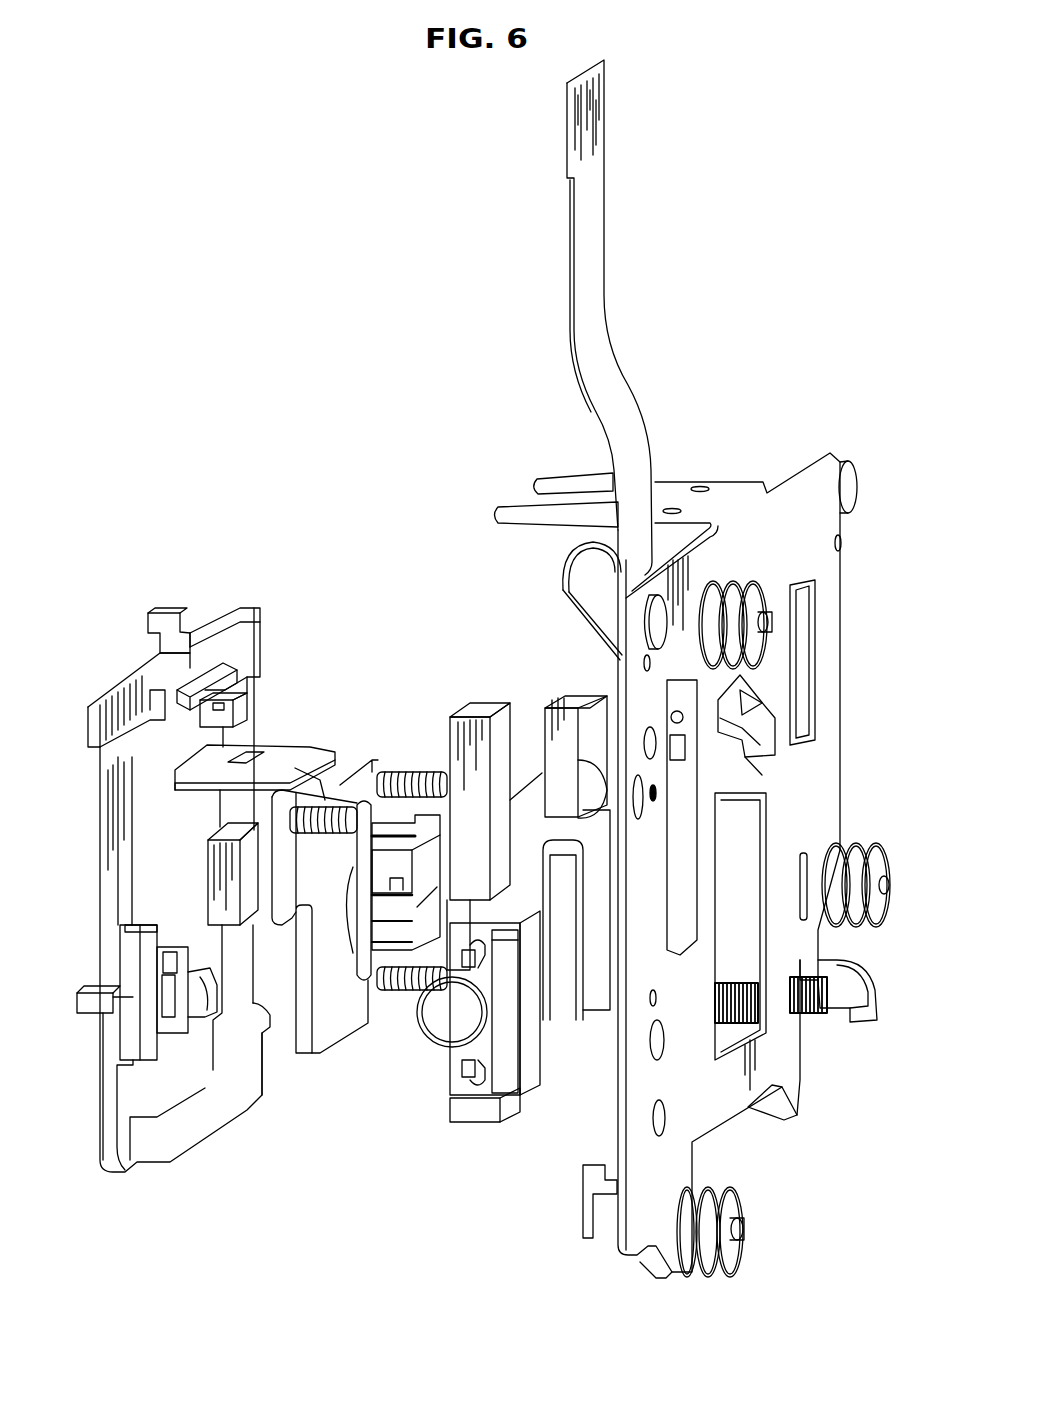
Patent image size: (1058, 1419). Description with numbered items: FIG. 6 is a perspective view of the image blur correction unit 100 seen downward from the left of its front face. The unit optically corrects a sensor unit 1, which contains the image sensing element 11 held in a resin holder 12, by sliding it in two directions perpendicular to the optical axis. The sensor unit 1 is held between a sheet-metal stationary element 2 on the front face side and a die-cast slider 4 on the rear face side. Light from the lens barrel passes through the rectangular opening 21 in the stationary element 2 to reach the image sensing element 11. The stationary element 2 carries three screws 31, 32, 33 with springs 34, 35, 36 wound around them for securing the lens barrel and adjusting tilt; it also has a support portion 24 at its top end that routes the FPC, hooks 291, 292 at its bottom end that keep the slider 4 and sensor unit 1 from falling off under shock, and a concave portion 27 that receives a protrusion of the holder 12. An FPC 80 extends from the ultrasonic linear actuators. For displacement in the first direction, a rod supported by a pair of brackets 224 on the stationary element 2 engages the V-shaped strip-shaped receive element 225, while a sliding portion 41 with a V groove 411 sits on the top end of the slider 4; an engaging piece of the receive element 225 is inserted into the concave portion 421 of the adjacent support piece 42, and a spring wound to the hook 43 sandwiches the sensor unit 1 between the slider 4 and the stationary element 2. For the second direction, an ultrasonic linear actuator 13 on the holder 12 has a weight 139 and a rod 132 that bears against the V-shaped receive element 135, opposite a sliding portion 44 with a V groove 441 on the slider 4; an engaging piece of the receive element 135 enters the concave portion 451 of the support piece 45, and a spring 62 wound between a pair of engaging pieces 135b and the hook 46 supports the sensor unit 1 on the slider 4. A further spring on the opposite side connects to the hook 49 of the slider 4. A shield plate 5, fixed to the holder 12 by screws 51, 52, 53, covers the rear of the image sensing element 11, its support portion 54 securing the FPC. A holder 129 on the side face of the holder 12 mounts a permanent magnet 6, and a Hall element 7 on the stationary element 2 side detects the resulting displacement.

The image blur correction unit 100 is at (248, 295).
The FPC 80 is at (590, 213).
The support portion 24 is at (553, 488).
The Hall element 7 is at (577, 700).
The stationary element 2 is at (832, 745).
The spring 36 is at (745, 595).
The screw 33 is at (762, 612).
The strip-shaped receive element 225 is at (742, 690).
The bracket 224 is at (744, 740).
The rectangular opening 21 is at (767, 830).
The screw 32 is at (882, 880).
The spring 35 is at (880, 925).
The concave portion 27 is at (803, 912).
The hook 292 is at (770, 1110).
The spring 34 is at (727, 1275).
The screw 31 is at (744, 1228).
The hook 291 is at (598, 1222).
The ultrasonic linear actuator 13 is at (468, 690).
The weight 139 is at (478, 712).
The holder 129 is at (417, 907).
The holder 12 is at (542, 1067).
The strip-shaped receive element 135 is at (520, 1088).
The sensor unit 1 is at (510, 1108).
The image sensing element 11 is at (560, 1048).
The spring 62 is at (421, 1038).
The engaging piece 135b is at (464, 1068).
The rod 132 is at (472, 1072).
The screw 51 is at (400, 990).
The screw 52 is at (410, 782).
The screw 53 is at (322, 803).
The support portion 54 is at (275, 755).
The shield plate 5 is at (322, 1043).
The permanent magnet 6 is at (222, 862).
The slider 4 is at (200, 1130).
The hook 43 is at (158, 622).
The sliding portion 41 is at (218, 660).
The V groove 411 is at (210, 688).
The support piece 42 is at (238, 720).
The concave portion 421 is at (226, 704).
The sliding portion 44 is at (150, 925).
The V groove 441 is at (137, 928).
The support piece 45 is at (168, 950).
The concave portion 451 is at (178, 962).
The hook 46 is at (88, 993).
The hook 49 is at (206, 990).